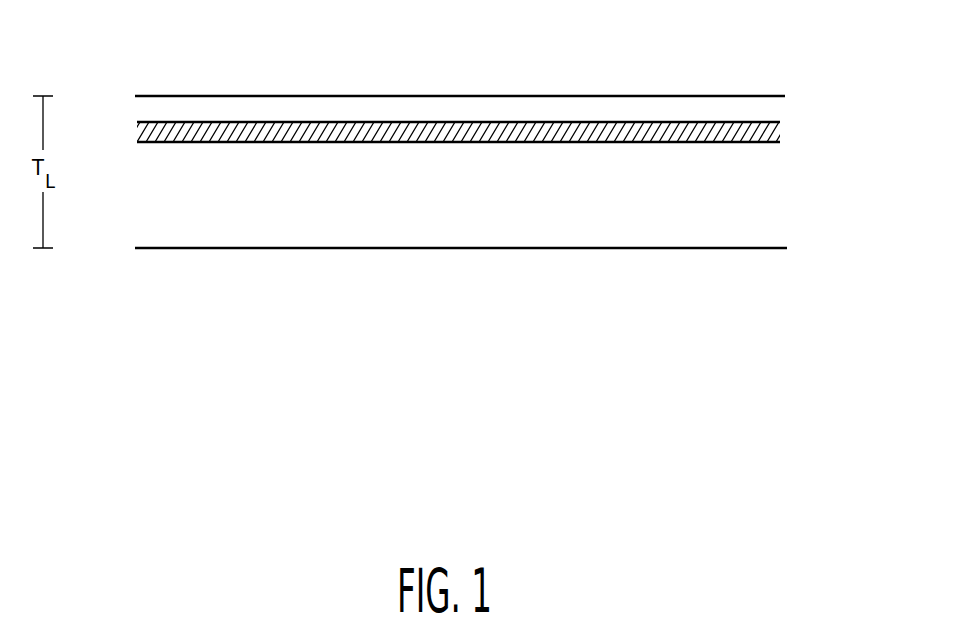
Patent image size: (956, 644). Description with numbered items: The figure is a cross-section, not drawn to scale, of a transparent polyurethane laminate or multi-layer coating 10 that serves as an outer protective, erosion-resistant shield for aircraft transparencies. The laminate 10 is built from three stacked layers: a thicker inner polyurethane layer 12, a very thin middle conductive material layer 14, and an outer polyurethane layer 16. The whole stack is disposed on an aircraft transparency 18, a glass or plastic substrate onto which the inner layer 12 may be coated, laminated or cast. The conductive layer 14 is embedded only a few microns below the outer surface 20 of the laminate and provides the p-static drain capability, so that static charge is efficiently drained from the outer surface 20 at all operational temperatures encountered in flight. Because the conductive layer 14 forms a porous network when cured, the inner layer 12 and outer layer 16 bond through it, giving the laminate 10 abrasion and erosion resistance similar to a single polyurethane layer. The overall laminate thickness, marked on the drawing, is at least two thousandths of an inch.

The transparent polyurethane laminate 10 is at (132, 96).
The inner polyurethane layer 12 is at (460, 207).
The middle conductive material layer 14 is at (780, 129).
The outer polyurethane layer 16 is at (773, 110).
The aircraft transparency 18 is at (460, 338).
The outer surface 20 is at (537, 96).